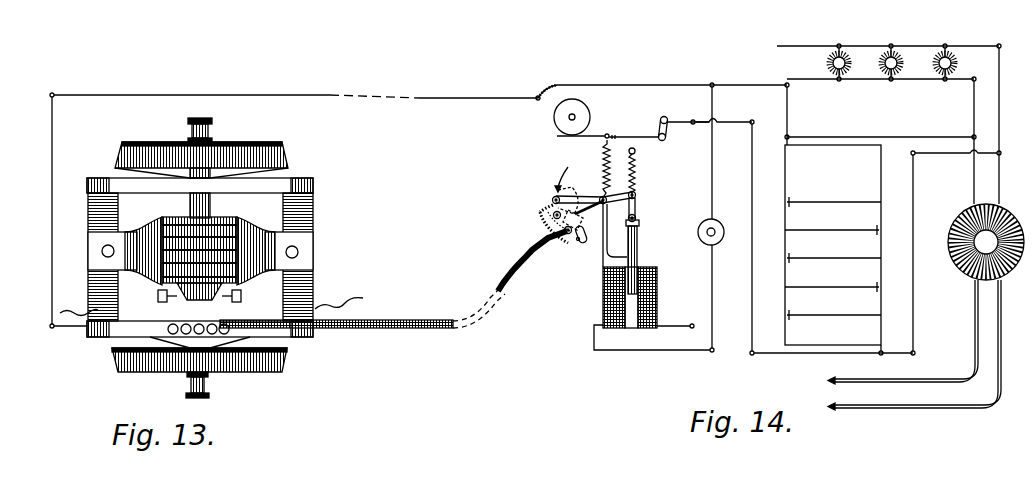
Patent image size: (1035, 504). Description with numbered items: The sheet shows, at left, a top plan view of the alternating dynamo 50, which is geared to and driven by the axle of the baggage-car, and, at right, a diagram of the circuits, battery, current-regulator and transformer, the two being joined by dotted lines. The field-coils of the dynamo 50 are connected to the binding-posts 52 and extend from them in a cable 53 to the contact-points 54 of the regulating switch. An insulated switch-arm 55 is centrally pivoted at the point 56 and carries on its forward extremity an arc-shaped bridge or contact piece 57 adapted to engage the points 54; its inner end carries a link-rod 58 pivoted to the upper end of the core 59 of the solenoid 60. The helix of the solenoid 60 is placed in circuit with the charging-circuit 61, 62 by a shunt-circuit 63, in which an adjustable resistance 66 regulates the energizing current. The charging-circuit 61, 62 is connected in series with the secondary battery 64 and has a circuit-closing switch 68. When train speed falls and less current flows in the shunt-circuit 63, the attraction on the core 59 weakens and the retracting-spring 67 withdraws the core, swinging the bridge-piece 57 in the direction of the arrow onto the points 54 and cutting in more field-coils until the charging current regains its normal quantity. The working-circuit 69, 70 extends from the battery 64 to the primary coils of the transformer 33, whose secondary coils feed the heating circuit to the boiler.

In FIG. 13, the alternating dynamo 50 is at (307, 176).
In FIG. 14, the alternating dynamo 50 is at (584, 112).
In FIG. 13, the binding-posts 52 is at (228, 331).
In FIG. 13, the cable 53 is at (388, 320).
In FIG. 14, the cable 53 is at (512, 279).
In FIG. 14, the contact-points 54 is at (552, 199).
In FIG. 14, the insulated switch-arm 55 is at (586, 202).
In FIG. 14, the pivot point 56 is at (614, 172).
In FIG. 14, the arc-shaped bridge or contact piece 57 is at (571, 198).
In FIG. 14, the link-rod 58 is at (637, 209).
In FIG. 14, the core 59 is at (641, 225).
In FIG. 14, the solenoid 60 is at (657, 291).
In FIG. 14, the charging-circuit 61 is at (671, 81).
In FIG. 14, the charging-circuit 62 is at (634, 137).
In FIG. 14, the shunt-circuit 63 is at (652, 337).
In FIG. 14, the secondary battery 64 is at (805, 221).
In FIG. 14, the adjustable resistance 66 is at (719, 242).
In FIG. 14, the retracting-spring 67 is at (638, 178).
In FIG. 14, the circuit-closing switch 68 is at (666, 118).
In FIG. 14, the working-circuit 69 is at (914, 237).
In FIG. 14, the working-circuit 70 is at (882, 138).
In FIG. 14, the transformer 33 is at (1000, 212).